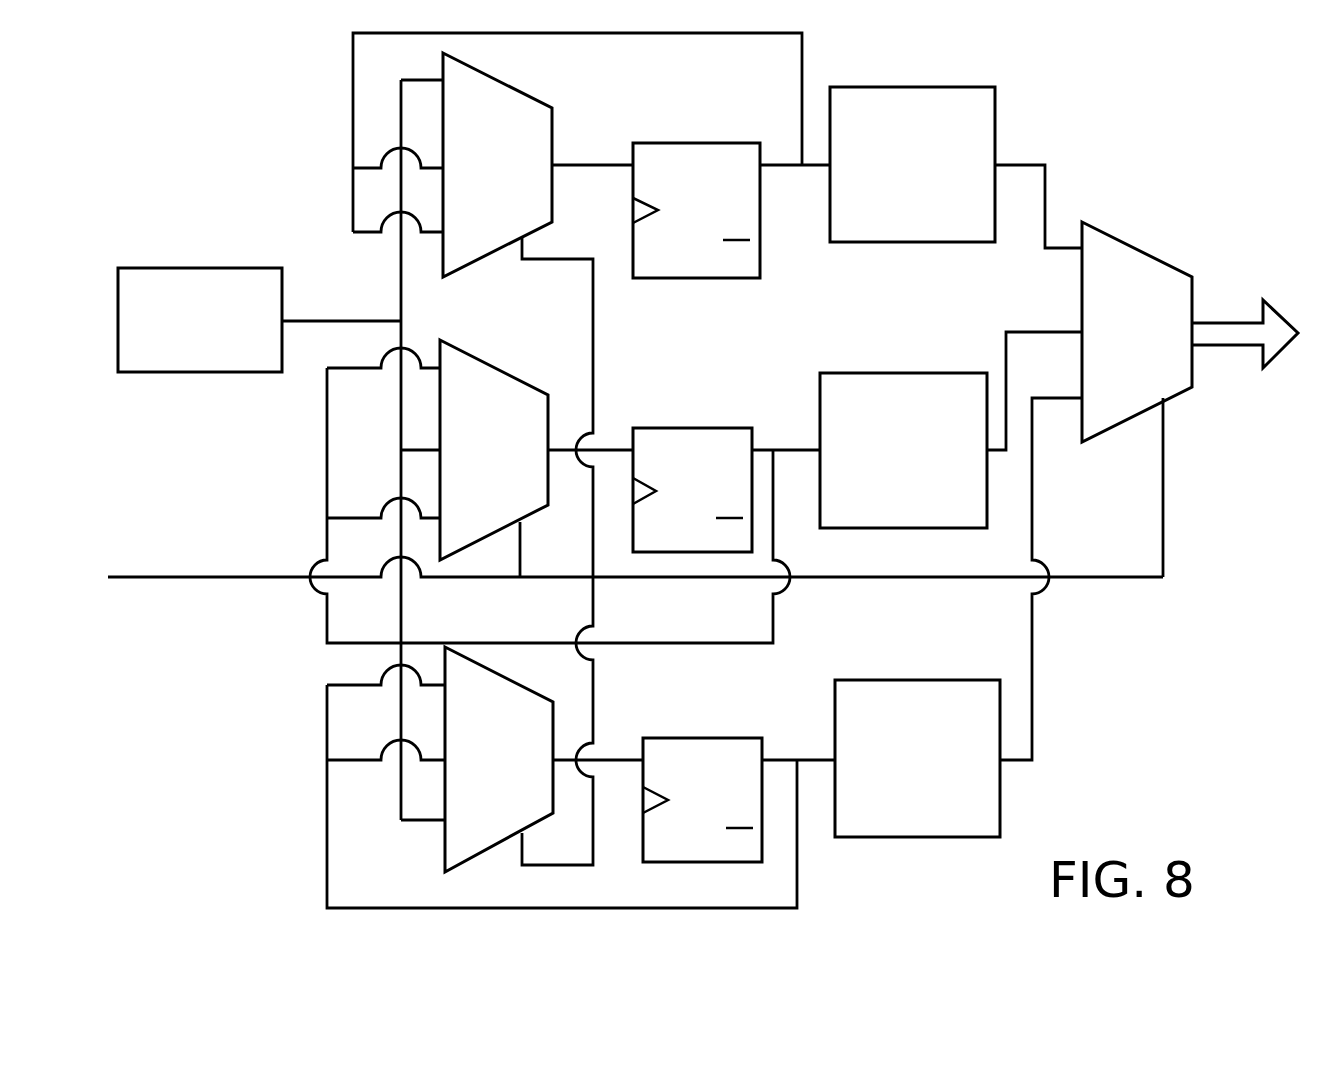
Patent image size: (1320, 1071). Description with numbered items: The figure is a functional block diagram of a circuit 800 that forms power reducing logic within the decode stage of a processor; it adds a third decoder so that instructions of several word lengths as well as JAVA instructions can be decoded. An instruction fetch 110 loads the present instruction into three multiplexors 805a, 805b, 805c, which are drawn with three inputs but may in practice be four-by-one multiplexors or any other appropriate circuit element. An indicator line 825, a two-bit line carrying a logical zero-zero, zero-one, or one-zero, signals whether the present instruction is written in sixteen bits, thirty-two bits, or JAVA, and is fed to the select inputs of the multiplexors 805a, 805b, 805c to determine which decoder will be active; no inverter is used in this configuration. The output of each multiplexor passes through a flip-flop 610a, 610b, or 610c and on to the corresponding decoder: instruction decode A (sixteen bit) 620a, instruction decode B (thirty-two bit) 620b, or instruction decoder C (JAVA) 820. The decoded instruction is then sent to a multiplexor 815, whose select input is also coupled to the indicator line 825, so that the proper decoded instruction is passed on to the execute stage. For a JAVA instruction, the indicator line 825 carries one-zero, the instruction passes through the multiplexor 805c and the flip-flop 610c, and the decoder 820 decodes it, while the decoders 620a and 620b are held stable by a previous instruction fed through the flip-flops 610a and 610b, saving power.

The instruction fetch 110 is at (198, 373).
The multiplexor 805a is at (580, 88).
The multiplexor 805b is at (513, 372).
The multiplexor 805c is at (443, 843).
The flip-flop 610a is at (762, 255).
The flip-flop 610b is at (713, 427).
The flip-flop 610c is at (742, 737).
The instruction decode A (16 bit) 620a is at (915, 85).
The instruction decode B (32 bit) 620b is at (907, 372).
The instruction decoder C (JAVA) 820 is at (922, 680).
The multiplexor 815 is at (1150, 252).
The indicator line 825 is at (203, 579).
The circuit 800 is at (1135, 632).